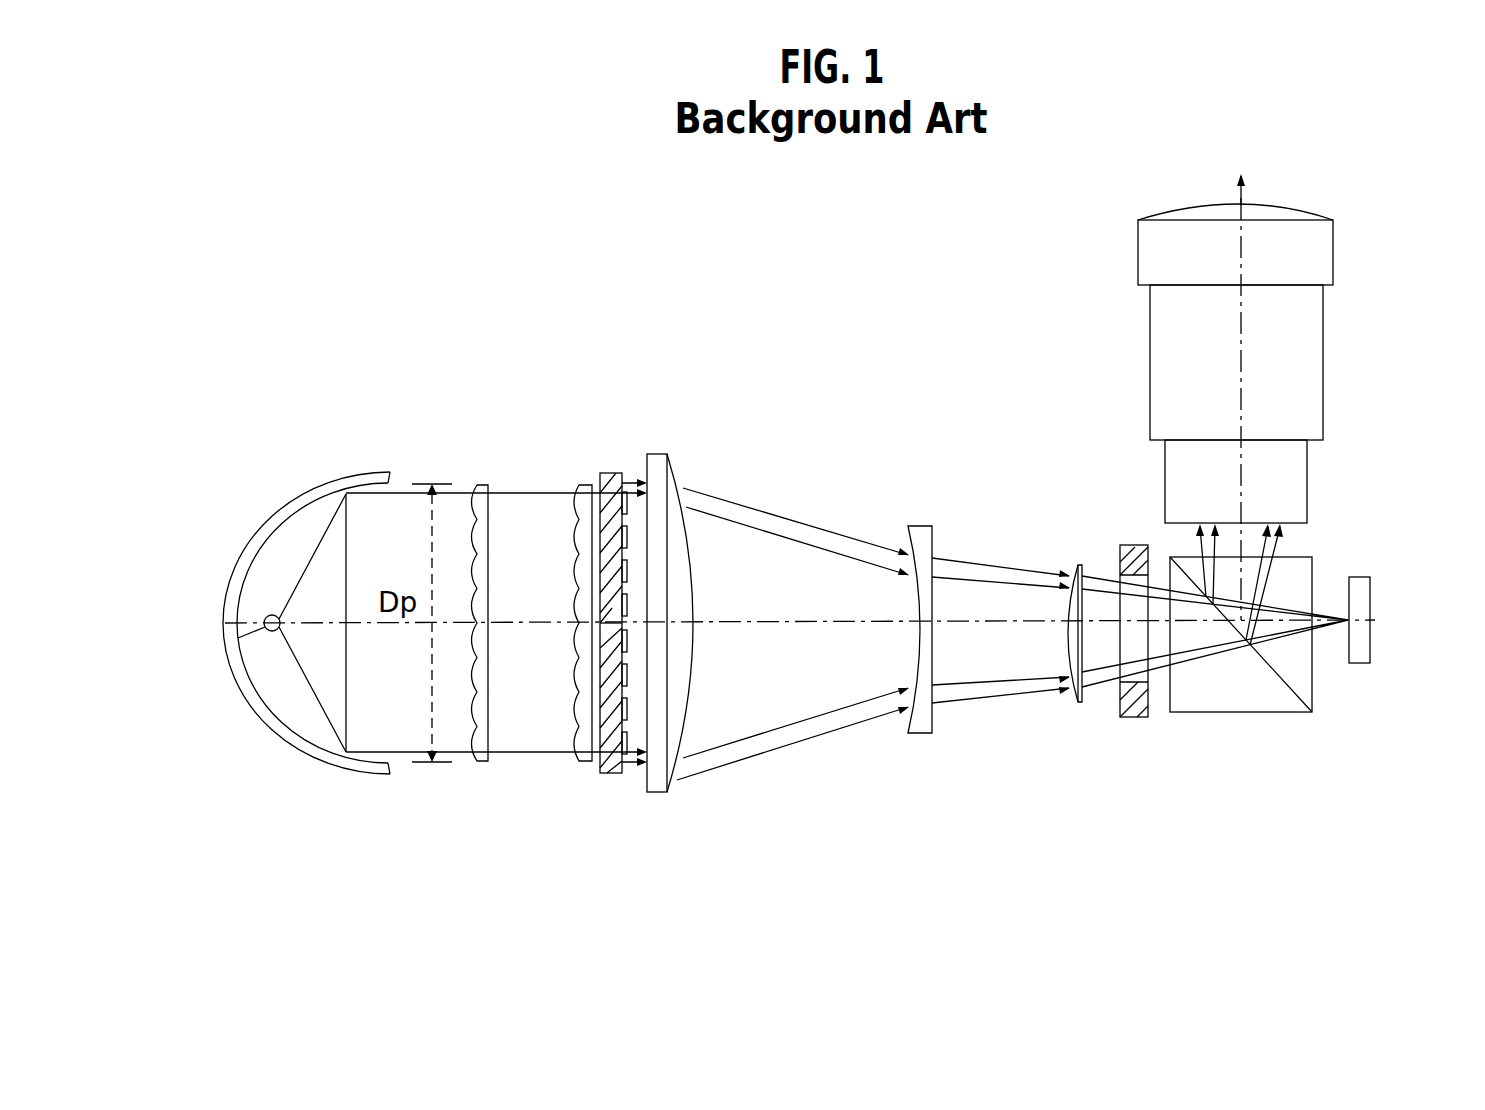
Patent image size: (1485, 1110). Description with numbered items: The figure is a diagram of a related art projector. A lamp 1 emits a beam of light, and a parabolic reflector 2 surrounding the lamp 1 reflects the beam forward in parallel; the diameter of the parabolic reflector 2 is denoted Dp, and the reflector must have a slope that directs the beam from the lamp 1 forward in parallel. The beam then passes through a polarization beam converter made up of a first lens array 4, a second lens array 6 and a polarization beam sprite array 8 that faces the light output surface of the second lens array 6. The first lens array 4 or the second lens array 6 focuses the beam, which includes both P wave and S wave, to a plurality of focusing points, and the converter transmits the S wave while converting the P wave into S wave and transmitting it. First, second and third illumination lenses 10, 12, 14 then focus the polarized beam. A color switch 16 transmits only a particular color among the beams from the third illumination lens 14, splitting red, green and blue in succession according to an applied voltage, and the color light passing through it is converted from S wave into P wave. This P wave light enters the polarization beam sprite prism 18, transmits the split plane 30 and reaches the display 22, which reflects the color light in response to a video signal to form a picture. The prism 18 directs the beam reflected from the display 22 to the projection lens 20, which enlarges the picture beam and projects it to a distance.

The lamp 1 is at (266, 616).
The parabolic reflector 2 is at (324, 496).
The first lens array 4 is at (486, 487).
The second lens array 6 is at (588, 487).
The polarization beam sprite array 8 is at (612, 473).
The first illumination lens 10 is at (655, 454).
The second illumination lens 12 is at (920, 527).
The third illumination lens 14 is at (1078, 566).
The color switch 16 is at (1140, 713).
The polarization beam sprite prism 18 is at (1232, 712).
The projection lens 20 is at (1305, 423).
The display 22 is at (1361, 598).
The split plane 30 is at (1290, 699).